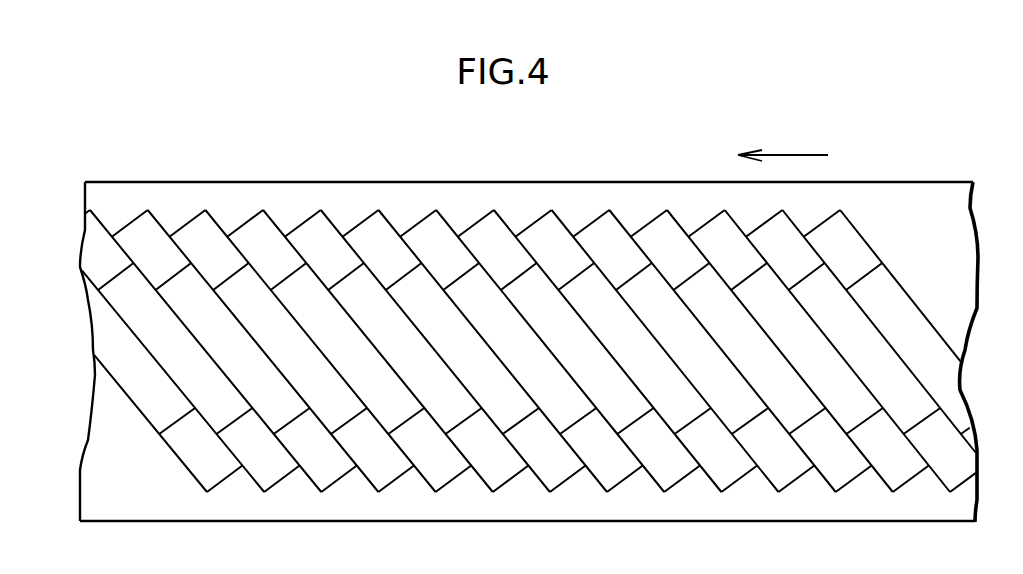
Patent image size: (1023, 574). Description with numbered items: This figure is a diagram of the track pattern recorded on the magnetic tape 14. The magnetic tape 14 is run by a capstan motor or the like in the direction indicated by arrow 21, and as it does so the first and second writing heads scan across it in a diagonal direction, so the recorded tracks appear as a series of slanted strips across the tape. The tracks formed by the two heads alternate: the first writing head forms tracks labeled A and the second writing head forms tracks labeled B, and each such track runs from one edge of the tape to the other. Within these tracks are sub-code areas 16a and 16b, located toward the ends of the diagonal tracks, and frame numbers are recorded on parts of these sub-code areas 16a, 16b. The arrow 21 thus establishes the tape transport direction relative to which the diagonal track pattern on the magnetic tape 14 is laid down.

The magnetic tape 14 is at (903, 202).
The sub-code area 16a is at (248, 235).
The sub-code area 16b is at (425, 228).
The arrow 21 is at (788, 155).